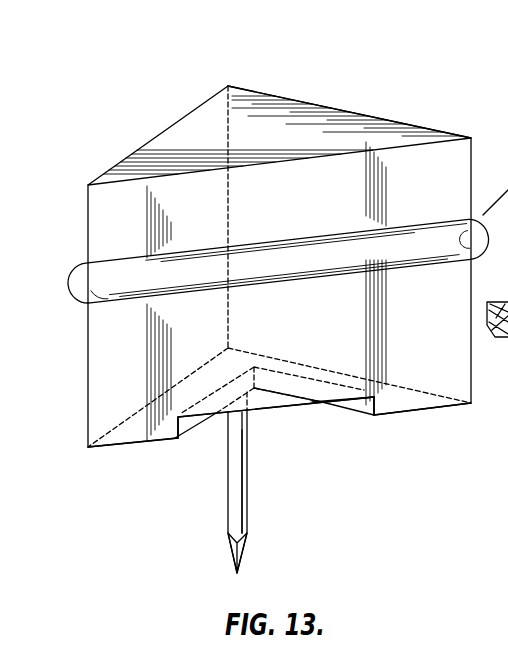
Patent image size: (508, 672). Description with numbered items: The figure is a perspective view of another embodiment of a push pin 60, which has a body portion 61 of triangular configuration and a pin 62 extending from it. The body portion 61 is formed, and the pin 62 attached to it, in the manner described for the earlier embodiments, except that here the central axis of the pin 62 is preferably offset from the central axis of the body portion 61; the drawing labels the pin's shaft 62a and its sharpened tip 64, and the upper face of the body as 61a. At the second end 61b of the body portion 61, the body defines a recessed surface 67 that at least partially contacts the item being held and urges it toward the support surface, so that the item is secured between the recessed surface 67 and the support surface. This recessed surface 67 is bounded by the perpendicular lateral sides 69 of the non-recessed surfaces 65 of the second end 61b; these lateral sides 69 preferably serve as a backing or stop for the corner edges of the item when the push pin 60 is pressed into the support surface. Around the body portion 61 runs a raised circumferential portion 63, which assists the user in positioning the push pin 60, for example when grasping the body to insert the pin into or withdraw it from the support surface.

The push pin 60 is at (266, 294).
The body portion 61 is at (103, 340).
The top face of block 61a is at (372, 138).
The second end 61b is at (167, 432).
The pin 62 is at (233, 452).
The spike shaft 62a is at (243, 519).
The raised circumferential portion 63 is at (82, 263).
The spike tip 64 is at (238, 567).
The non-recessed surfaces 65 is at (105, 452).
The recessed surface 67 is at (312, 415).
The lateral sides 69 is at (193, 423).